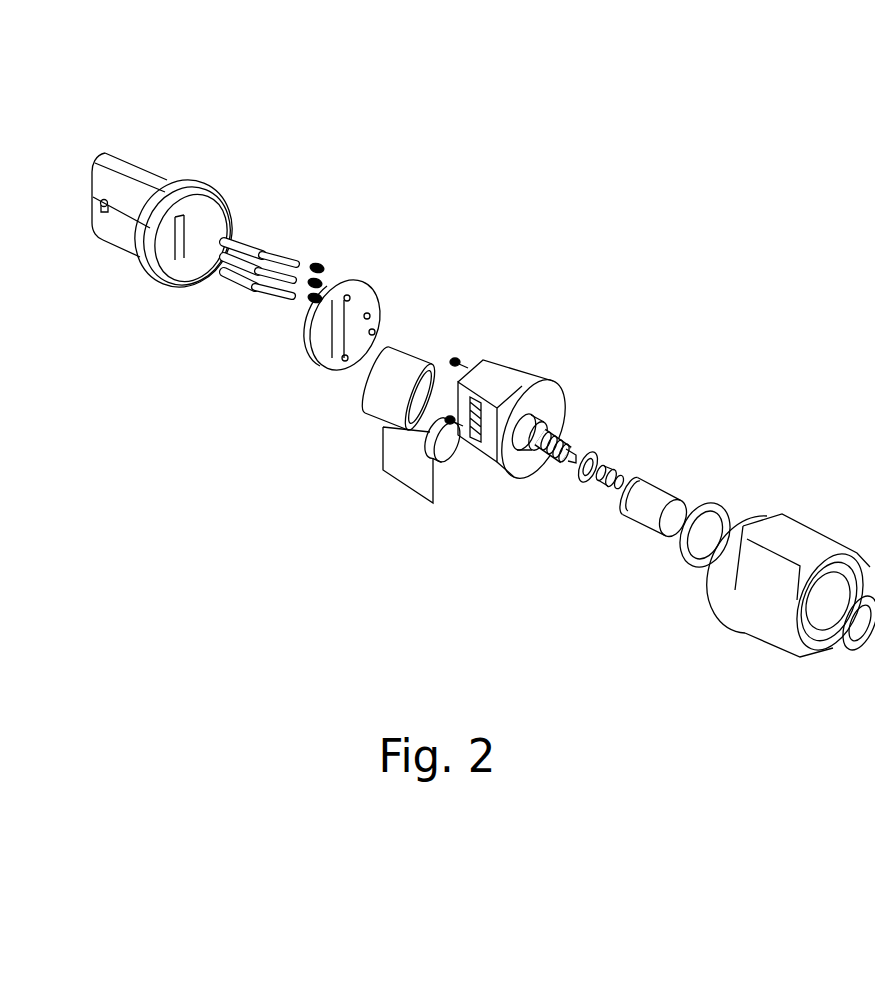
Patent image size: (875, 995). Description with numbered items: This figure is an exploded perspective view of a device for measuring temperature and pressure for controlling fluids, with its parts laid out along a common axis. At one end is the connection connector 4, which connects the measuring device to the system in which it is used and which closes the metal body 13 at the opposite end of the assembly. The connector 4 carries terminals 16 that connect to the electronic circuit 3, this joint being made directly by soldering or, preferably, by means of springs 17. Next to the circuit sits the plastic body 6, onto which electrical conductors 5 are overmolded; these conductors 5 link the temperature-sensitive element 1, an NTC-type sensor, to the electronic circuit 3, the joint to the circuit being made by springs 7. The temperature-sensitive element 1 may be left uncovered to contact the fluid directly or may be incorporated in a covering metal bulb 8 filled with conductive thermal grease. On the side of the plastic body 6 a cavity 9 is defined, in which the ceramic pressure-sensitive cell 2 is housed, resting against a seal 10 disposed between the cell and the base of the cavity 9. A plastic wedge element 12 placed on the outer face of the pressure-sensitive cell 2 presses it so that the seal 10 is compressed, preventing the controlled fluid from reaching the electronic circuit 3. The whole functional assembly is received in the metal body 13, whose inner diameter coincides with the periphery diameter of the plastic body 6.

The temperature-sensitive element 1 is at (620, 480).
The pressure-sensitive cell 2 is at (410, 473).
The electronic circuit 3 is at (353, 305).
The connection connector 4 is at (134, 164).
The electrical conductors 5 is at (573, 455).
The plastic body 6 is at (508, 387).
The springs 7 is at (450, 420).
The covering metal bulb 8 is at (648, 508).
The cavity 9 is at (482, 422).
The seal 10 is at (432, 428).
The plastic wedge element 12 is at (383, 393).
The metal body 13 is at (770, 592).
The terminals 16 is at (283, 297).
The springs 17 is at (317, 280).